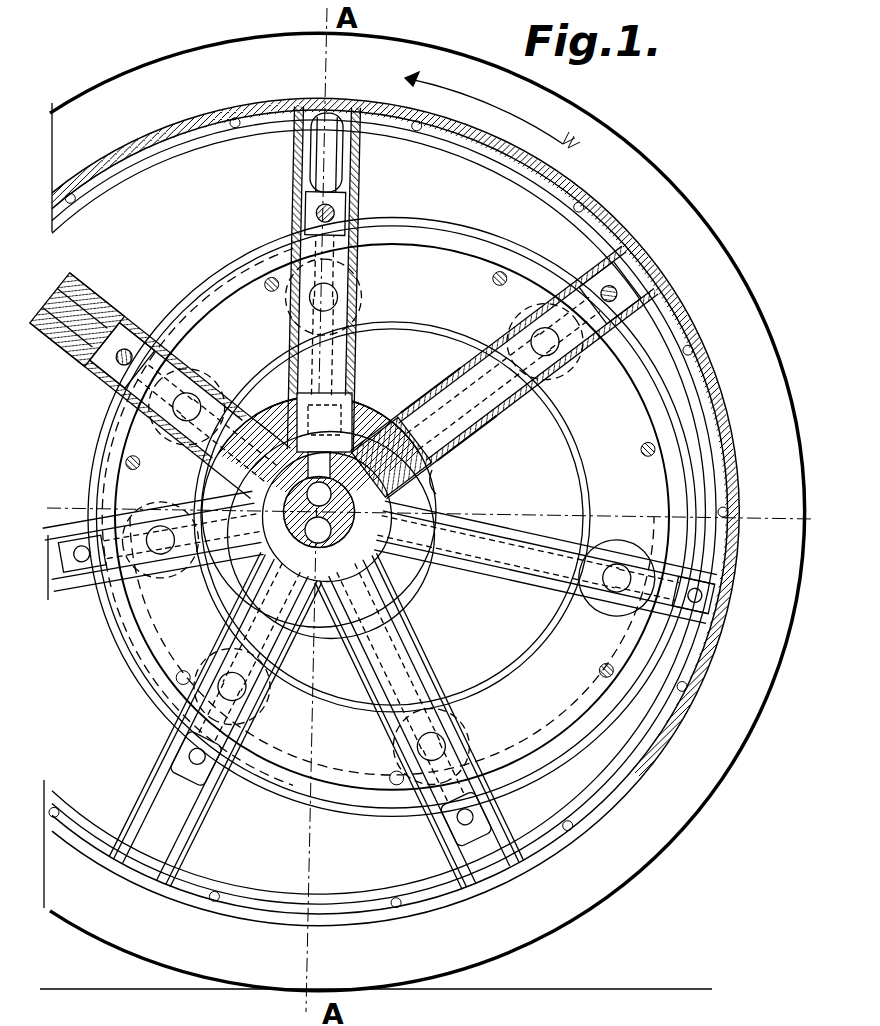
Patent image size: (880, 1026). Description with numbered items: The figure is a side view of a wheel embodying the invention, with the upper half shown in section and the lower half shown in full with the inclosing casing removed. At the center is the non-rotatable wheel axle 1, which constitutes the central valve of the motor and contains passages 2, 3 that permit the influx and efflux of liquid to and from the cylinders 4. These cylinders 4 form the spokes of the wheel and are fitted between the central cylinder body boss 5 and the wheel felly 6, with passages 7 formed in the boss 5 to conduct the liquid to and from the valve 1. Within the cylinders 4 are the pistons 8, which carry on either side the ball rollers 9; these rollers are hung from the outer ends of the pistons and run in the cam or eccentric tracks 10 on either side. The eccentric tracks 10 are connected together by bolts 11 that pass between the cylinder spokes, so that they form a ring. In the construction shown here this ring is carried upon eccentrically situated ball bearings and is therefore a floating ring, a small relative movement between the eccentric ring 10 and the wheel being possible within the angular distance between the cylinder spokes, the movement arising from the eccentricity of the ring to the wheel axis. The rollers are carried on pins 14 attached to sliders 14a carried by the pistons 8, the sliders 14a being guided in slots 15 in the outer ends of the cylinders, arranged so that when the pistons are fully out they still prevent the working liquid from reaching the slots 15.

The wheel axle 1 is at (344, 533).
The passage 2 is at (318, 530).
The passage 3 is at (319, 494).
The cylinder 4 is at (118, 304).
The central cylinder body boss 5 is at (430, 471).
The wheel felly 6 is at (394, 511).
The passage 7 is at (395, 457).
The piston 8 is at (449, 418).
The ball roller 9 is at (207, 382).
The cam or eccentric track 10 is at (392, 504).
The bolt 11 is at (390, 528).
The pin 14 is at (220, 382).
The slider 14a is at (303, 210).
The slot 15 is at (340, 192).